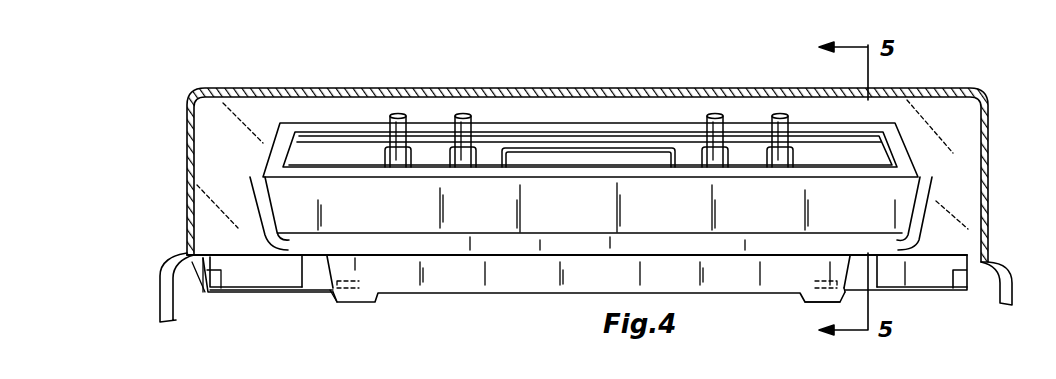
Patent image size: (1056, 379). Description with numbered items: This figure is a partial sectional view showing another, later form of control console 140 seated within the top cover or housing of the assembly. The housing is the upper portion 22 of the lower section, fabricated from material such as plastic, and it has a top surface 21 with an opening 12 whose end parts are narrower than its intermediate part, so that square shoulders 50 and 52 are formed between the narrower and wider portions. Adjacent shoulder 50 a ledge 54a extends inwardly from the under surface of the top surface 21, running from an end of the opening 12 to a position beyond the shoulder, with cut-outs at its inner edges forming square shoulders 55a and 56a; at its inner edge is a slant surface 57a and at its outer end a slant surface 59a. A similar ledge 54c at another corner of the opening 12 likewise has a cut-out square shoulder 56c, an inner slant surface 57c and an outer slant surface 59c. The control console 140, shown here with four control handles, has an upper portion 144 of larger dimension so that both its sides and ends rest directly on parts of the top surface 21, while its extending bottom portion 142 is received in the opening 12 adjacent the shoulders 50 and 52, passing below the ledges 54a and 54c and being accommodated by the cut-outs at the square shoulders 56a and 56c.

The opening 12 is at (220, 251).
The top surface 21 is at (193, 252).
The upper portion 22 is at (1013, 279).
The square shoulder 50 is at (303, 275).
The square shoulder 52 is at (915, 290).
The ledge 54a is at (201, 300).
The ledge 54c is at (800, 312).
The square shoulder 55a is at (247, 293).
The square shoulder 56a is at (326, 292).
The square shoulder 56c is at (853, 295).
The slant surface 57a is at (253, 267).
The slant surface 57c is at (927, 267).
The slant surface 59a is at (215, 272).
The slant surface 59c is at (967, 262).
The control console 140 is at (750, 119).
The bottom portion 142 is at (517, 287).
The upper portion 144 is at (920, 198).